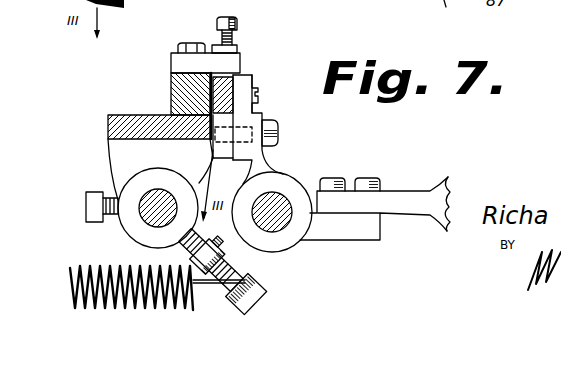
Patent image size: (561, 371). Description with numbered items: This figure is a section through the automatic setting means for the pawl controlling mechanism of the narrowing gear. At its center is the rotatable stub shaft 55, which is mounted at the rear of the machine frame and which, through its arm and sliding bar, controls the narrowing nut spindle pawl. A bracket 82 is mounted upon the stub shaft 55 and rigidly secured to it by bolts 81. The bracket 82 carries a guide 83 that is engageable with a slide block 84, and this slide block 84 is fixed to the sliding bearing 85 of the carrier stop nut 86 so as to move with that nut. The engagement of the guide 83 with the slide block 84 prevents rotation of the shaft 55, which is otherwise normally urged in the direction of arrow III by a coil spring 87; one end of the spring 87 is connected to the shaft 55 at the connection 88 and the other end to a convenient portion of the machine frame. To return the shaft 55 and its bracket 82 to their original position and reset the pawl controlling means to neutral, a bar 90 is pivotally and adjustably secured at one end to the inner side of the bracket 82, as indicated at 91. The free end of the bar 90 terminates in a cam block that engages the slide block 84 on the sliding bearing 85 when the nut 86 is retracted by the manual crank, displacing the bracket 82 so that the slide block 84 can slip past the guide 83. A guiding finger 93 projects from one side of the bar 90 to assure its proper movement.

The stub shaft 55 is at (156, 216).
The bolts 81 is at (86, 204).
The bracket 82 is at (118, 152).
The guide 83 is at (171, 84).
The slide block 84 is at (222, 148).
The sliding bearing 85 is at (280, 182).
The carrier stop nut 86 is at (416, 197).
The coil spring 87 is at (98, 268).
The spring connection to shaft 88 is at (222, 270).
The bar 90 is at (228, 88).
The pivotal adjustable securing means 91 is at (233, 62).
The guiding finger 93 is at (246, 105).